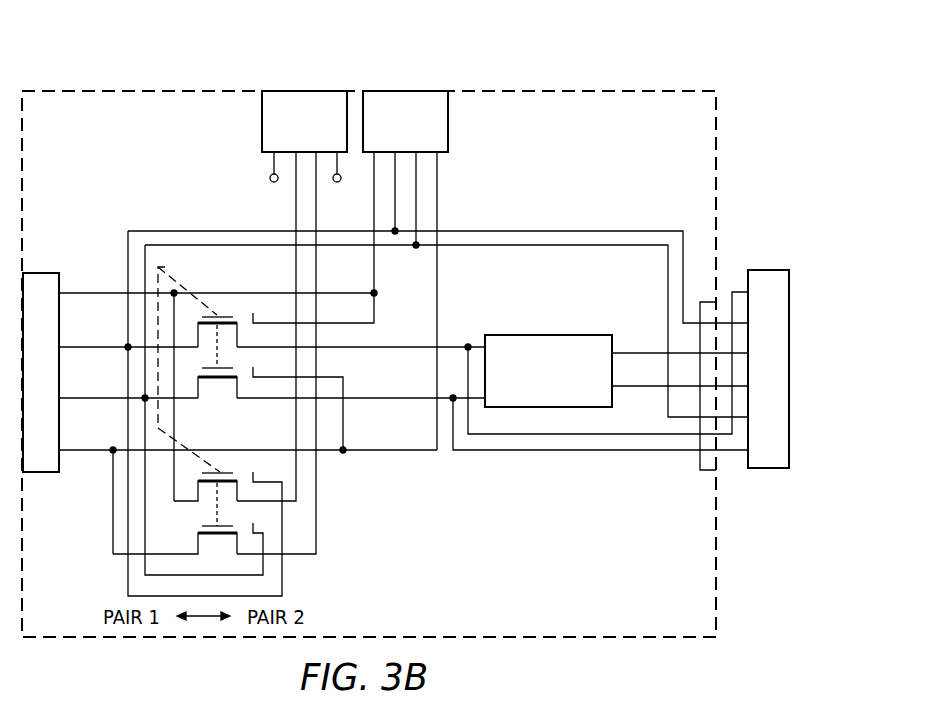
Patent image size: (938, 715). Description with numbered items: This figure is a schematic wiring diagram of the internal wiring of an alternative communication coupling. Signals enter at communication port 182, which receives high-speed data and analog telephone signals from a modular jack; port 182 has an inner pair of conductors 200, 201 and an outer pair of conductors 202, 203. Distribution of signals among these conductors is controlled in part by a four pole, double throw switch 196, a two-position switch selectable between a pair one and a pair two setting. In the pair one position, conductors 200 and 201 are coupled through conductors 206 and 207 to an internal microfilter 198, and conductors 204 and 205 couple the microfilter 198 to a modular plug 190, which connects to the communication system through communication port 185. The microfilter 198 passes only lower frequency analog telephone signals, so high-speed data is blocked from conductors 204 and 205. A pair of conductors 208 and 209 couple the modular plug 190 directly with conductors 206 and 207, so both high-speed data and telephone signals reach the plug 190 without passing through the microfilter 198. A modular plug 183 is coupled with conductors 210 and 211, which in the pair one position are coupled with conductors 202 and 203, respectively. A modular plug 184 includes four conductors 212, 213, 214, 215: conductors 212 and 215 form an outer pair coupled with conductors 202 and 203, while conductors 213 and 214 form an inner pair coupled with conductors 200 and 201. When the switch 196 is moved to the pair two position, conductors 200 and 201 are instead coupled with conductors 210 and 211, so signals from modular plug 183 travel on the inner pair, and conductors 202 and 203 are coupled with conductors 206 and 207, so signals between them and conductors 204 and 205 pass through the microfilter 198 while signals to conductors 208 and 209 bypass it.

The communication port 182 is at (42, 272).
The modular plug 183 is at (287, 91).
The modular plug 184 is at (408, 91).
The communication port 185 is at (700, 461).
The modular plug 190 is at (766, 269).
The four pole, double throw switch 196 is at (188, 293).
The internal microfilter 198 is at (548, 334).
The conductor 200 is at (118, 347).
The conductor 201 is at (117, 398).
The conductor 202 is at (98, 292).
The conductor 203 is at (90, 452).
The conductor 204 is at (638, 351).
The conductor 205 is at (625, 388).
The conductor 206 is at (466, 343).
The conductor 207 is at (367, 397).
The conductor 208 is at (578, 437).
The conductor 209 is at (519, 452).
The conductor 210 is at (296, 212).
The conductor 211 is at (317, 511).
The conductor 212 is at (377, 292).
The conductor 213 is at (394, 208).
The conductor 214 is at (417, 180).
The conductor 215 is at (438, 218).